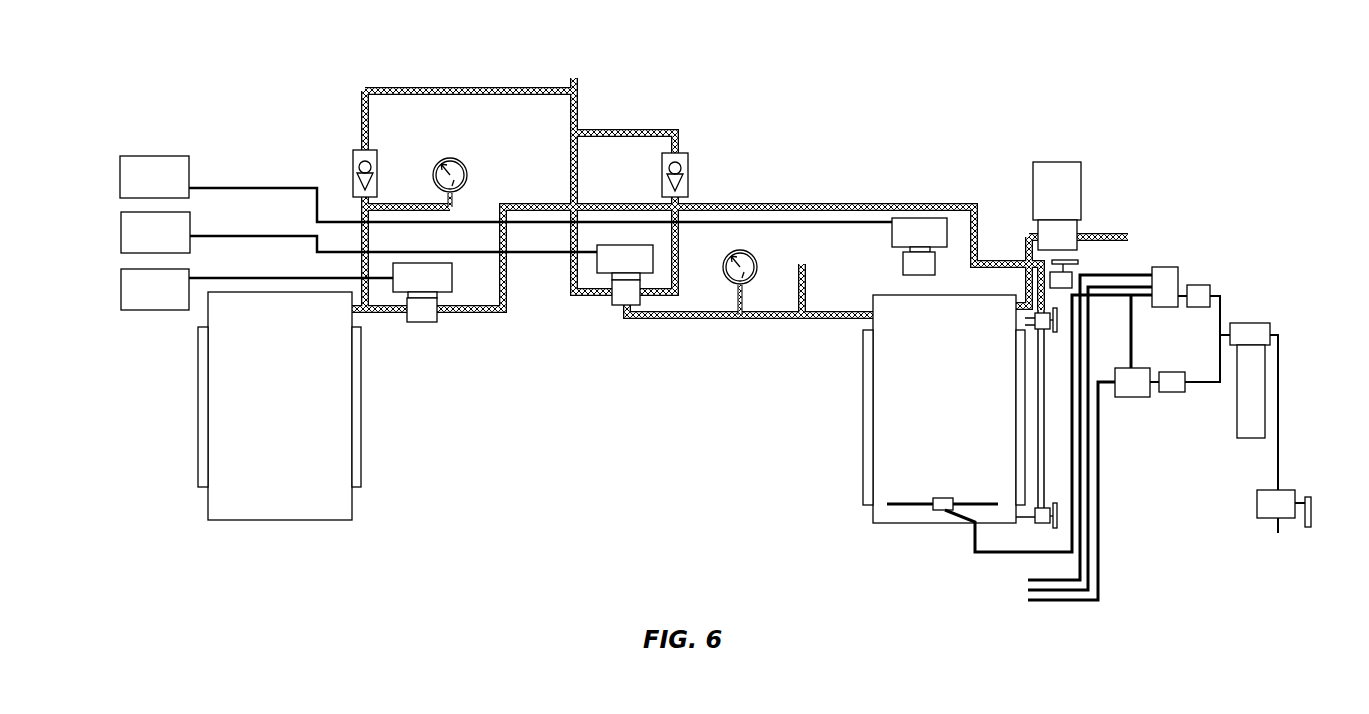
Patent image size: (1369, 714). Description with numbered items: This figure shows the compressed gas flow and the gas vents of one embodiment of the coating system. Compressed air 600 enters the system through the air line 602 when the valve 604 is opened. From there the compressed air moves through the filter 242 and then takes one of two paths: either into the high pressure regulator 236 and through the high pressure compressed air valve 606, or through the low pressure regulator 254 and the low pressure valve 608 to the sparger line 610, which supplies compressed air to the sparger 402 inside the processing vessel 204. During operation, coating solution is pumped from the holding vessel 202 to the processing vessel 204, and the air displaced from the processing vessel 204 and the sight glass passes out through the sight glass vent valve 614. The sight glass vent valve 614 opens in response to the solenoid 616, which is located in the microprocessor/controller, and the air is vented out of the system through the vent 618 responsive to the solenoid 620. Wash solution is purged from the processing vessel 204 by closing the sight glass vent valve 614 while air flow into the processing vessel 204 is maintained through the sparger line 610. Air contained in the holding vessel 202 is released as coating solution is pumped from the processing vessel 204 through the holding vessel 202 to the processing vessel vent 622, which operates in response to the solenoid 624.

The compressed air 600 is at (673, 98).
The holding vessel 202 is at (205, 405).
The processing vessel 204 is at (865, 408).
The high pressure regulator 236 is at (1205, 285).
The filter 242 is at (1250, 323).
The low pressure regulator 254 is at (1170, 392).
The sparger 402 is at (910, 502).
The air line 602 is at (1278, 525).
The valve 604 is at (1283, 490).
The high pressure compressed air valve 606 is at (1165, 267).
The low pressure valve 608 is at (1131, 397).
The sparger line 610 is at (975, 540).
The sight glass vent valve 614 is at (892, 232).
The solenoid 616 is at (120, 183).
The vent 618 is at (597, 258).
The solenoid 620 is at (121, 238).
The processing vessel vent 622 is at (452, 278).
The solenoid 624 is at (121, 294).